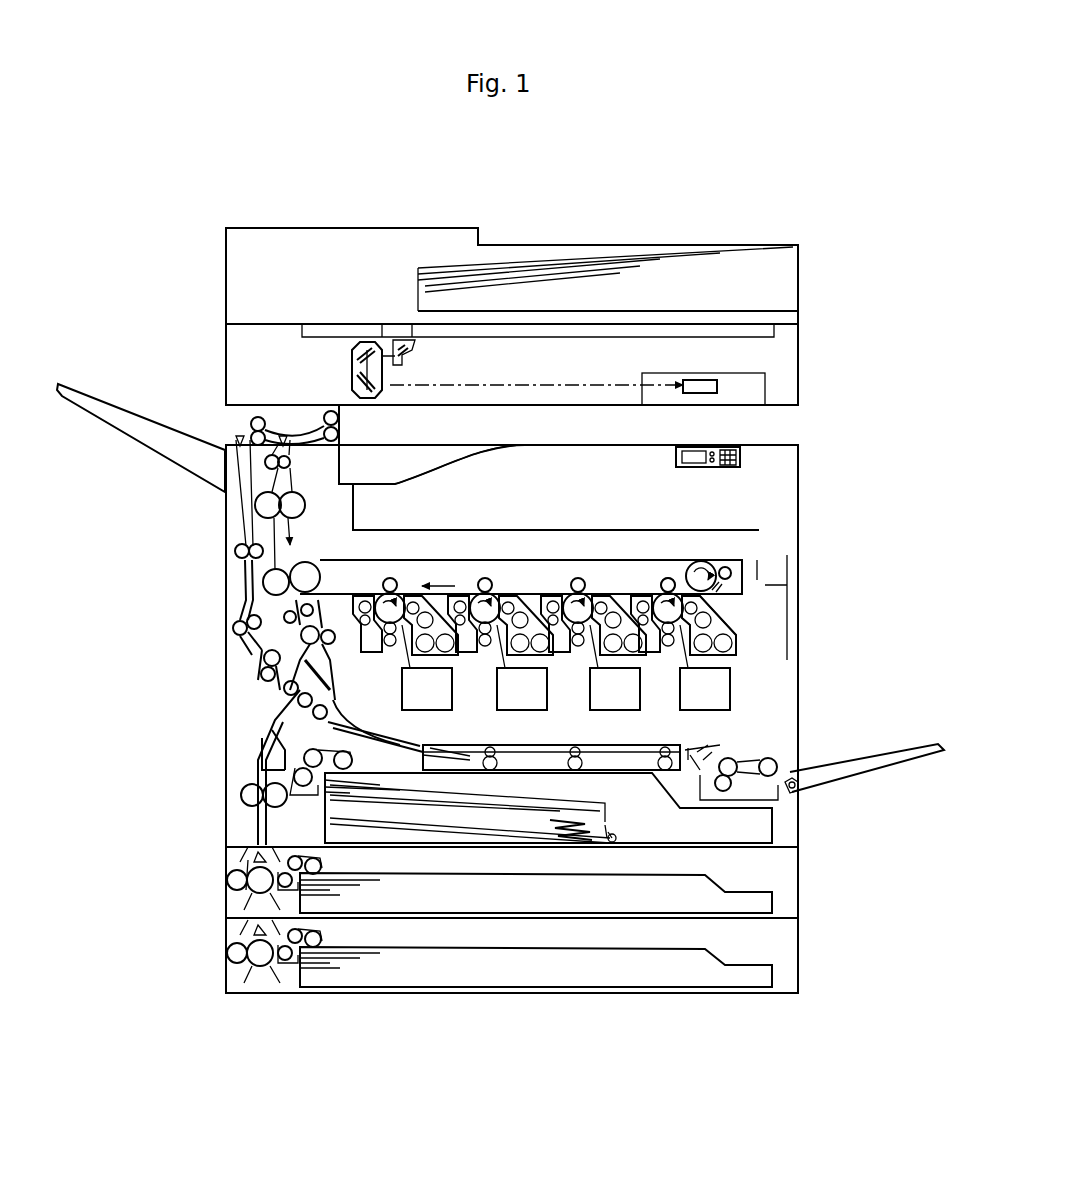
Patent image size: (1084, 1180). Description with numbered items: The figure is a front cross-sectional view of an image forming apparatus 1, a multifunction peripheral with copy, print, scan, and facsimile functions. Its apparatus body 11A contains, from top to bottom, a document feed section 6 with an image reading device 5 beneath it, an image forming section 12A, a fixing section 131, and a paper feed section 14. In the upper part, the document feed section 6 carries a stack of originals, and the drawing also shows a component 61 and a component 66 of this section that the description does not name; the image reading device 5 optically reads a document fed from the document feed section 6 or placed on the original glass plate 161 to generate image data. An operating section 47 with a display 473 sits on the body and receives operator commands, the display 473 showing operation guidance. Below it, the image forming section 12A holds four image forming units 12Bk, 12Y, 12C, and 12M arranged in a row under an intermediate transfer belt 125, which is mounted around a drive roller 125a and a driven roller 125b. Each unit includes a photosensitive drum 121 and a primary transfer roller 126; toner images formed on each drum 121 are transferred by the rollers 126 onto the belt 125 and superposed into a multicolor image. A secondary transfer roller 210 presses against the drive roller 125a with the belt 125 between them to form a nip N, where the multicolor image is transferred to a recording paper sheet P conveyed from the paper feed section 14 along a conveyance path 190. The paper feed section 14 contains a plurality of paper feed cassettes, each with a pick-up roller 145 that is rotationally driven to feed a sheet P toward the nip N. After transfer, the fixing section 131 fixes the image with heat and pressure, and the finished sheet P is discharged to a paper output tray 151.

The image forming apparatus 1 is at (888, 300).
The image reading device 5 is at (205, 358).
The document feed section 6 is at (642, 228).
The document tray 61 is at (699, 250).
The original glass plate 161 is at (657, 335).
The automatic document feeder 66 is at (712, 312).
The apparatus body 11A is at (802, 472).
The operating section 47 is at (742, 462).
The display 473 is at (689, 449).
The paper output tray 151 is at (377, 484).
The image forming unit for black 12Bk is at (396, 574).
The image forming unit for yellow 12Y is at (487, 566).
The image forming unit for cyan 12C is at (584, 568).
The image forming unit for magenta 12M is at (668, 562).
The intermediate transfer belt 125 is at (701, 560).
The drive roller 125a is at (331, 546).
The driven roller 125b is at (732, 568).
The primary transfer roller 126 is at (662, 583).
The image forming section 12A is at (762, 598).
The photosensitive drum 121 is at (655, 658).
The fixing section 131 is at (250, 505).
The nip N is at (262, 532).
The conveyance path 190 is at (262, 560).
The secondary transfer roller 210 is at (262, 592).
The pick-up roller 145 is at (318, 930).
The paper feed section 14 is at (772, 878).
The recording paper sheet P is at (604, 797).